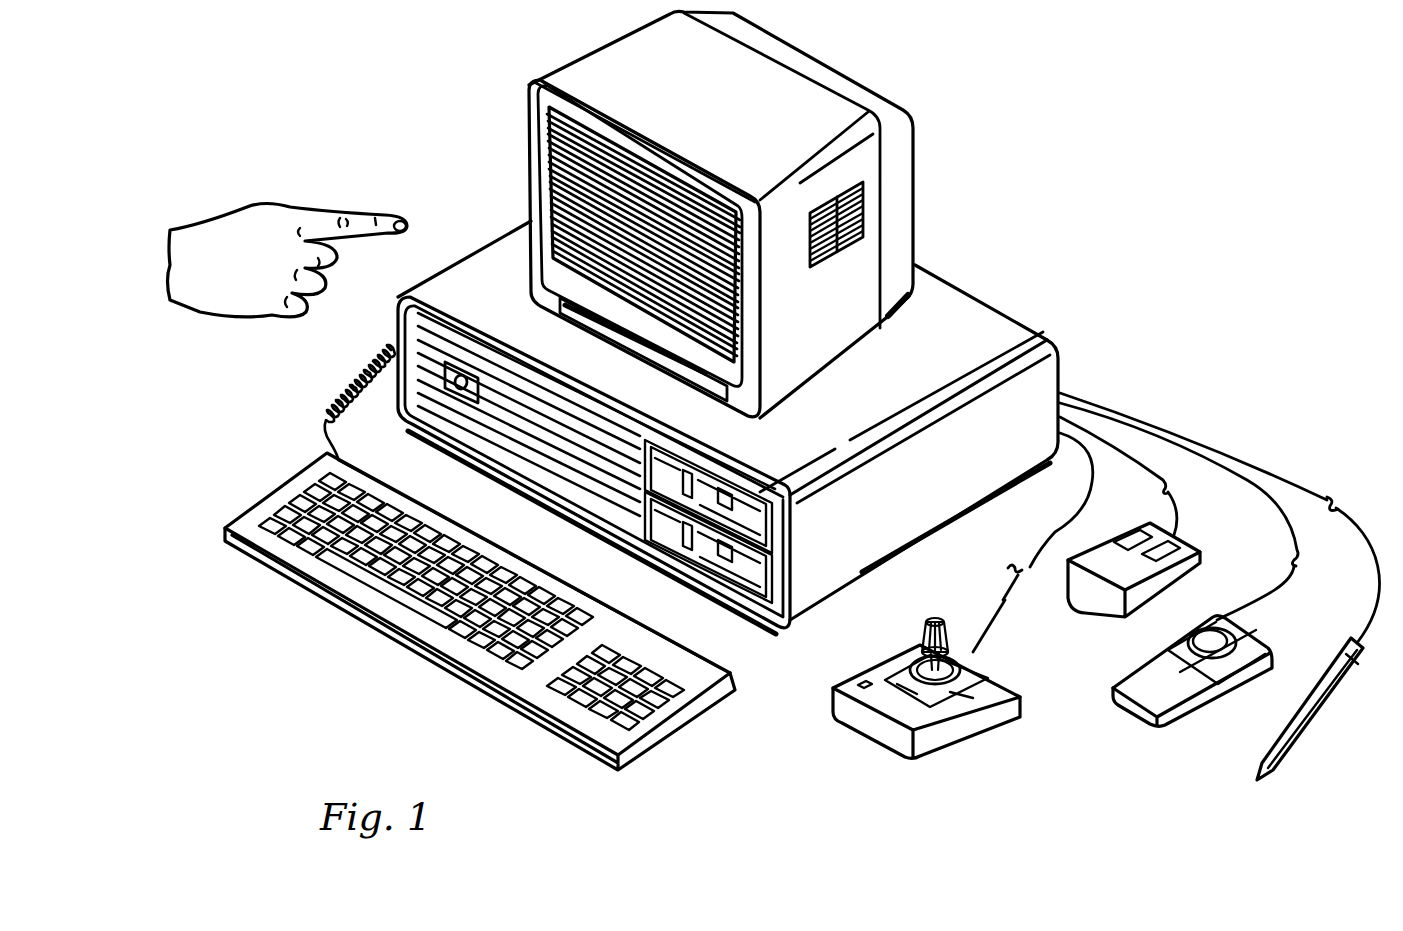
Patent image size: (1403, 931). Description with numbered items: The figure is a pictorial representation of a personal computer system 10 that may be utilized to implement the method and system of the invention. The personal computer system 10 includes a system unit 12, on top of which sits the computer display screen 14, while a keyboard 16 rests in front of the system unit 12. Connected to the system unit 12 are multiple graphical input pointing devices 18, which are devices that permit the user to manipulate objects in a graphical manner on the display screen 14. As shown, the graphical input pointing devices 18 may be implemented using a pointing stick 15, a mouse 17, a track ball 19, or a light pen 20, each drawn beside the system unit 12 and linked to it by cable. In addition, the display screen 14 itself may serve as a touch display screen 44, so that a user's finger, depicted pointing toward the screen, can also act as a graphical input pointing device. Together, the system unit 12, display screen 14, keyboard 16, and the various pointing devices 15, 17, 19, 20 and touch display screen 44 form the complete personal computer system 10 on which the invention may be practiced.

The personal computer system 10 is at (404, 128).
The system unit 12 is at (937, 513).
The computer display screen 14 is at (915, 219).
The pointing stick 15 is at (967, 717).
The keyboard 16 is at (522, 697).
The mouse 17 is at (1100, 603).
The graphical input pointing devices 18 is at (1117, 807).
The track ball 19 is at (1153, 703).
The light pen 20 is at (1297, 747).
The touch display screen 44 is at (570, 182).